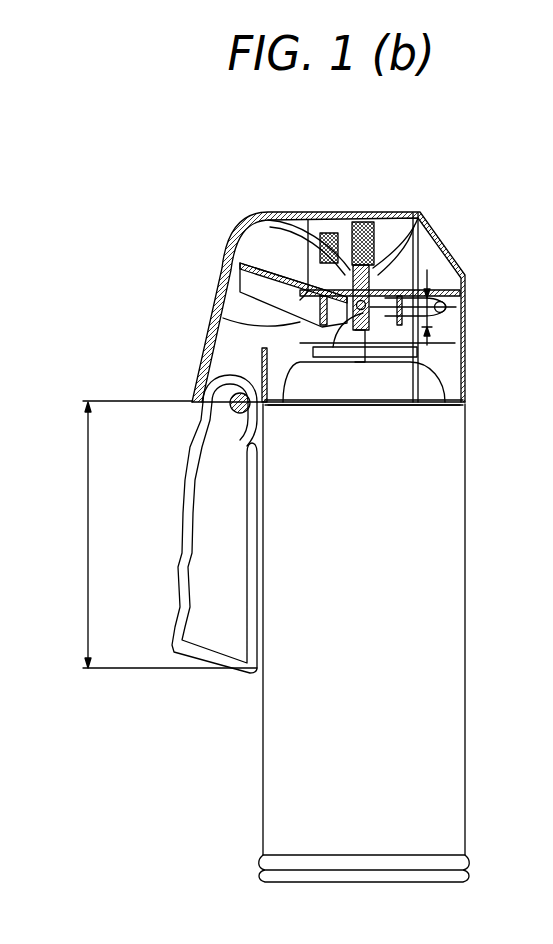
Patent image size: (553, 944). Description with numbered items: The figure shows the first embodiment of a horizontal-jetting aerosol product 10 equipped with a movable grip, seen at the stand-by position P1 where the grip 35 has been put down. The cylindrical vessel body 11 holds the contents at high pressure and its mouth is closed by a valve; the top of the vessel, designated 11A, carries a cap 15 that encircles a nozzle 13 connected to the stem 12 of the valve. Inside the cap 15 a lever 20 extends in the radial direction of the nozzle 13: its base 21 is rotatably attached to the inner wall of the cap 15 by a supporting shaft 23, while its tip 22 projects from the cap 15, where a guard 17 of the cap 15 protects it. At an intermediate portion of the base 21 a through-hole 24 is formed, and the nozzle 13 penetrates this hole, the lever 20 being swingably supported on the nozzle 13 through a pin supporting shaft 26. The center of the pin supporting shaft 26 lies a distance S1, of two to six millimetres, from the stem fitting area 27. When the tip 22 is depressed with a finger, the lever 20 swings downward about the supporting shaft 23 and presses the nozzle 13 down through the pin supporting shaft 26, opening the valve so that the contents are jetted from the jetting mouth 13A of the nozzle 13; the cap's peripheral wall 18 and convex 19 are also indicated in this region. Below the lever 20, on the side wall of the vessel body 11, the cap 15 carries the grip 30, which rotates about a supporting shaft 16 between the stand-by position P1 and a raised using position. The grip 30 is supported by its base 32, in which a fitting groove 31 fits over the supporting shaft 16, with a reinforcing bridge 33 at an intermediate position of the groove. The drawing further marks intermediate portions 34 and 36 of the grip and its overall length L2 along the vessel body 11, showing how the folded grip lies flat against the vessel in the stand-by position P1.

The aerosol product 10 is at (472, 183).
The vessel body 11 is at (462, 597).
The container shoulder 11A is at (347, 406).
The stem 12 is at (430, 350).
The nozzle 13 is at (375, 268).
The jetting mouth 13A is at (371, 230).
The cap 15 is at (430, 236).
The supporting shaft 16 is at (241, 406).
The guard 17 is at (222, 248).
The peripheral wall 18 is at (262, 353).
The convex 19 is at (244, 378).
The lever 20 is at (278, 268).
The base 21 is at (434, 294).
The tip 22 is at (235, 278).
The supporting shaft 23 is at (446, 308).
The through-hole 24 is at (347, 240).
The pin supporting shaft 26 is at (347, 357).
The stem fitting area 27 is at (362, 330).
The grip 30 is at (185, 515).
The fitting groove 31 is at (257, 408).
The base 32 is at (223, 382).
The bridge 33 is at (242, 440).
The clip intermediate portion 34 is at (178, 566).
The grip 35 is at (204, 600).
The clip bottom end 36 is at (175, 643).
The clip length L2 is at (156, 534).
The stand-by position P1 is at (254, 676).
The distance S1 is at (438, 303).